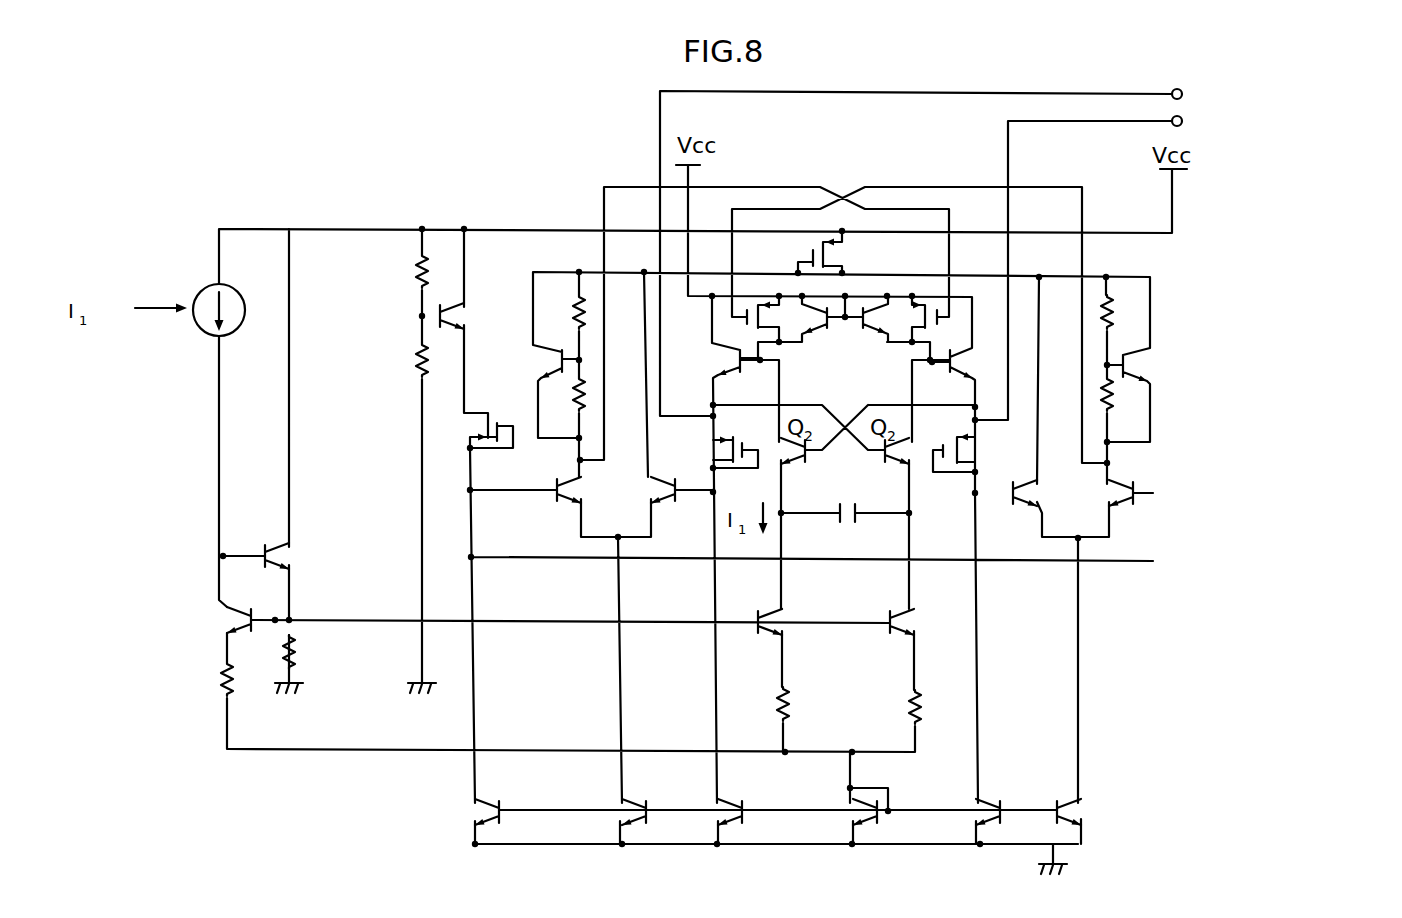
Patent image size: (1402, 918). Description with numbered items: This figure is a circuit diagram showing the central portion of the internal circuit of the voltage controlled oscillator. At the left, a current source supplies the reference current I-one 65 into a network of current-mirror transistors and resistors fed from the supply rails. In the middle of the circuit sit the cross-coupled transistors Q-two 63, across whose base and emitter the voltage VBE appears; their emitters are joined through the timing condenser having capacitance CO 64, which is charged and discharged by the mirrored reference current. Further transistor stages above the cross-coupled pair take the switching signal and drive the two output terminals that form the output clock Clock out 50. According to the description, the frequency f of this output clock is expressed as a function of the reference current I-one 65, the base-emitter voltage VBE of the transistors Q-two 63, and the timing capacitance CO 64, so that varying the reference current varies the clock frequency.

The output clock (Clock out) 50 is at (1192, 86).
The cross-coupled transistor pair Q2 63 is at (858, 412).
The timing condenser capacitance CO 64 is at (860, 477).
The reference current I1 65 is at (104, 294).